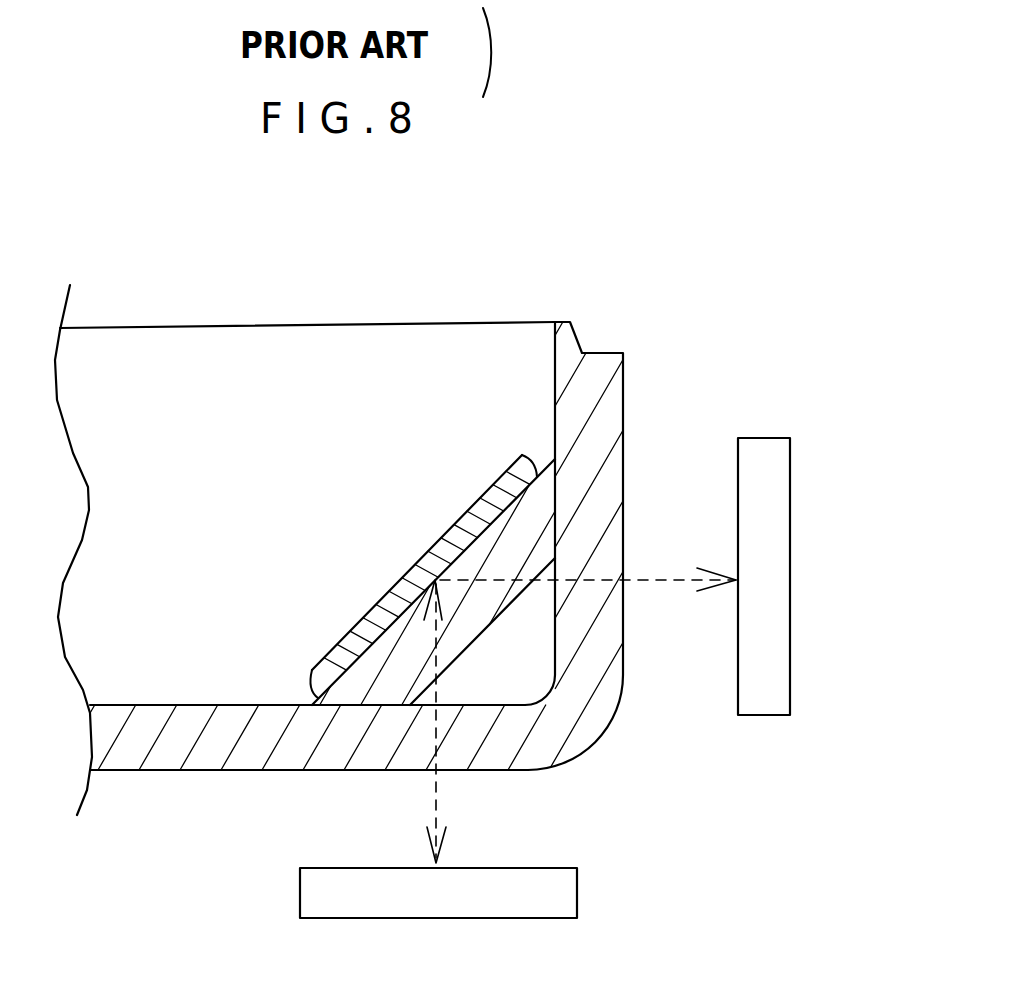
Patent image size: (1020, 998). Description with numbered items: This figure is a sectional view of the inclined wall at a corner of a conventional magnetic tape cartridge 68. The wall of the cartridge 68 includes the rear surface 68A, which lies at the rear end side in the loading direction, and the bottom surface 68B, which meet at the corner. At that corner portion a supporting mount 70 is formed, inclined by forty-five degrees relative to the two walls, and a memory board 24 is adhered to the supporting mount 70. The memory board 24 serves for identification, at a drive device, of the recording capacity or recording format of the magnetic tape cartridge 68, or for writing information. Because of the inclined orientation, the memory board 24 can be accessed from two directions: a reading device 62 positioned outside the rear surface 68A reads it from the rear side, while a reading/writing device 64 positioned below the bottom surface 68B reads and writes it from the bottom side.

The magnetic tape cartridge 68 is at (418, 541).
The rear surface 68A is at (623, 397).
The bottom surface 68B is at (163, 772).
The memory board 24 is at (410, 567).
The supporting mount 70 is at (477, 612).
The reading device 62 is at (790, 698).
The reading/writing device 64 is at (577, 888).